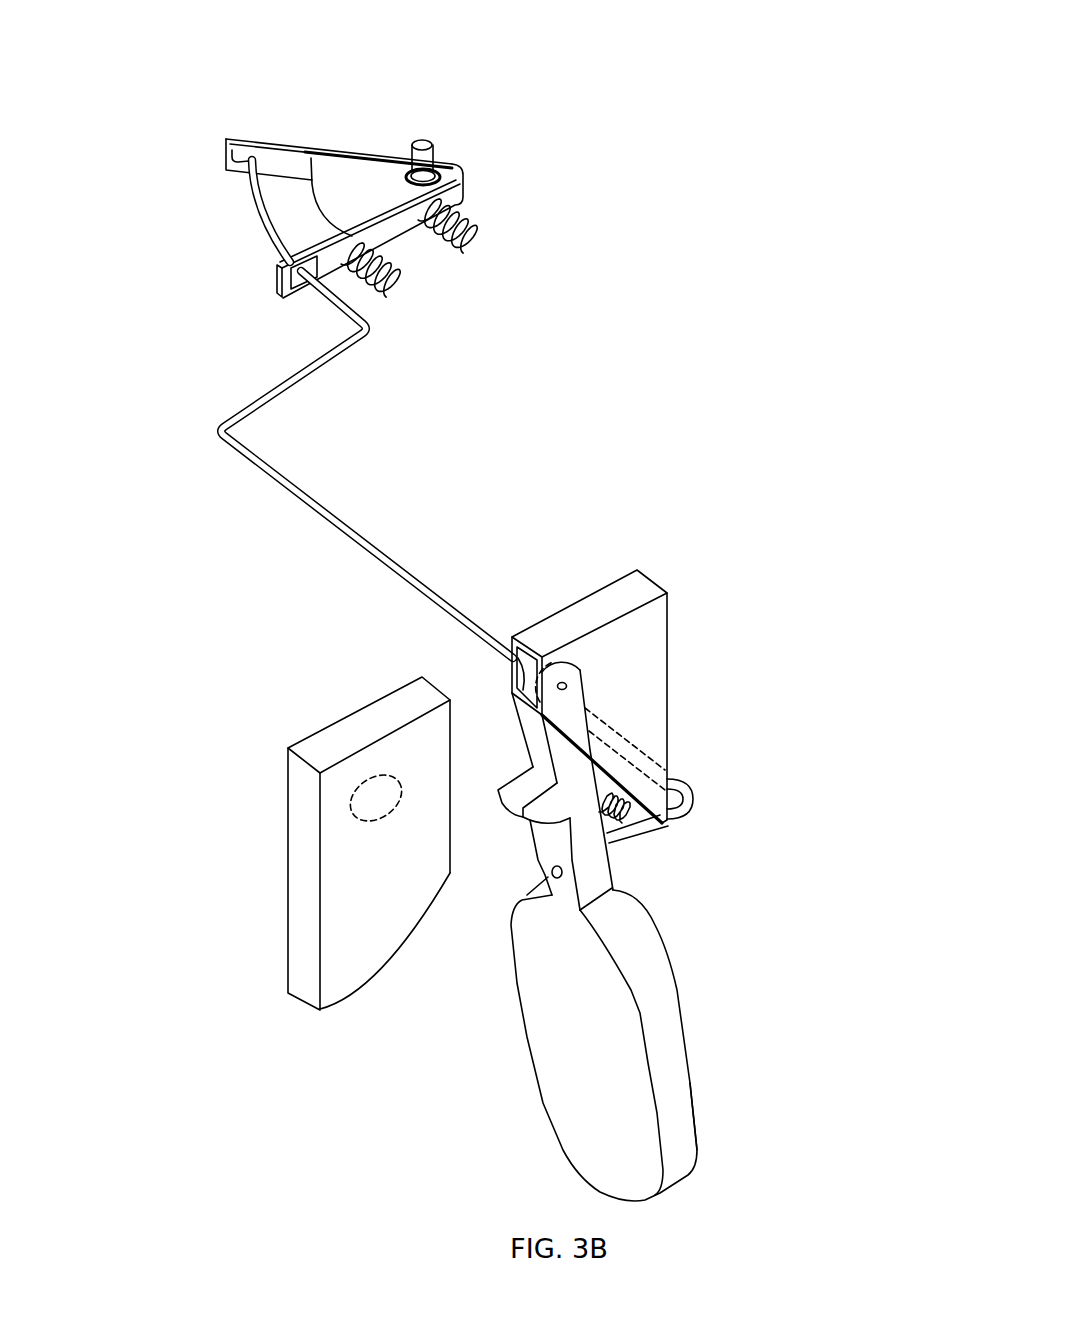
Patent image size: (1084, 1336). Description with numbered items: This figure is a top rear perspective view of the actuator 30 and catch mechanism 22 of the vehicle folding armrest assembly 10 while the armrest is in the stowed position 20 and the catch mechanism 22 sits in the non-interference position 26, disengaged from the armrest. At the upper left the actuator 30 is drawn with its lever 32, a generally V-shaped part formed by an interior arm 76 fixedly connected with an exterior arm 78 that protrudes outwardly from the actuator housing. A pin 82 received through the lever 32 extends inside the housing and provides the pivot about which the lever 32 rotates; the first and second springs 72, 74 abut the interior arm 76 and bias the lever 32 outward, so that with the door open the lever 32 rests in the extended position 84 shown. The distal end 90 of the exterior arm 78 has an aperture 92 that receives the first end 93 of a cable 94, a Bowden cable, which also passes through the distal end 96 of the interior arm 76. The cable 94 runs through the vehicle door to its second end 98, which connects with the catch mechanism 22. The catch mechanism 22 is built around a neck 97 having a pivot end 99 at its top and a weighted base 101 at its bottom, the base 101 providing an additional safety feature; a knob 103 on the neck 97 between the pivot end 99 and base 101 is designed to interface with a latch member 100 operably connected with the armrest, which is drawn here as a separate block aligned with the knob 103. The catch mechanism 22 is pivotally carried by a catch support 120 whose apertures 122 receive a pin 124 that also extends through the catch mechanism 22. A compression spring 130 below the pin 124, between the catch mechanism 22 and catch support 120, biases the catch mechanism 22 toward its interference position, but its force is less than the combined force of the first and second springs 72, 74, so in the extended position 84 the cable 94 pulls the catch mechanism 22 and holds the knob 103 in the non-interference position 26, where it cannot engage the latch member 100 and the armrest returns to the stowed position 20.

The vehicle folding armrest assembly 10 is at (765, 70).
The stowed position 20 is at (732, 363).
The catch mechanism 22 is at (567, 1085).
The non-interference position 26 is at (745, 1000).
The actuator 30 is at (512, 178).
The lever 32 is at (333, 172).
The first spring 72 is at (403, 291).
The second spring 74 is at (489, 247).
The interior arm 76 is at (383, 226).
The exterior arm 78 is at (275, 140).
The pin 82 is at (424, 140).
The extended position 84 is at (207, 220).
The distal end 90 is at (224, 152).
The aperture 92 is at (232, 140).
The first end 93 is at (262, 222).
The cable 94 is at (232, 462).
The distal end 96 is at (277, 291).
The neck 97 is at (577, 767).
The second end 98 is at (552, 875).
The pivot end 99 is at (526, 677).
The latch member 100 is at (340, 742).
The base 101 is at (680, 1137).
The knob 103 is at (510, 790).
The catch support 120 is at (610, 597).
The apertures 122 is at (567, 686).
The pin 124 is at (568, 692).
The compression spring 130 is at (623, 818).